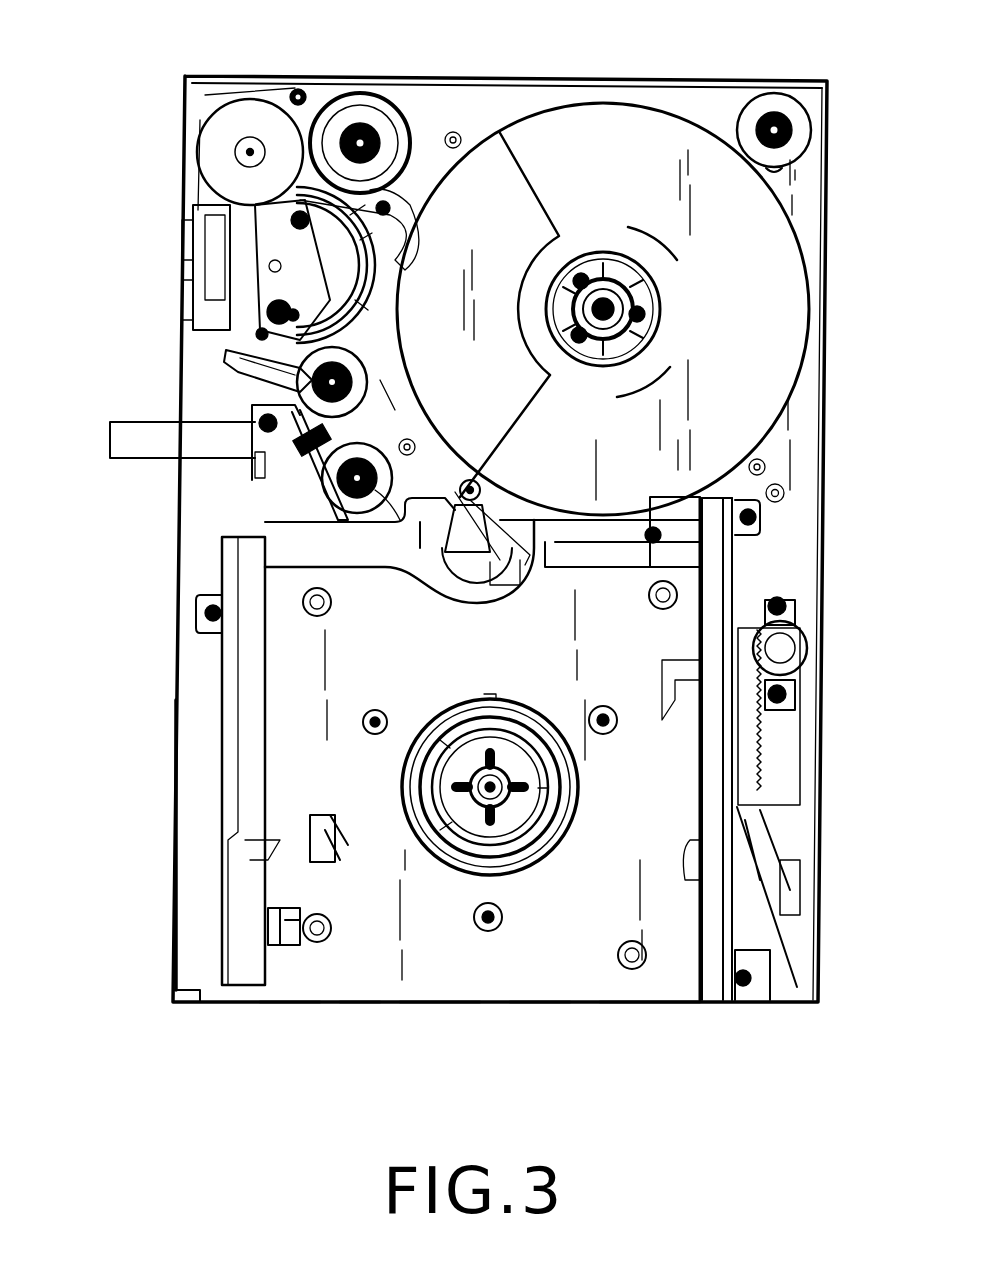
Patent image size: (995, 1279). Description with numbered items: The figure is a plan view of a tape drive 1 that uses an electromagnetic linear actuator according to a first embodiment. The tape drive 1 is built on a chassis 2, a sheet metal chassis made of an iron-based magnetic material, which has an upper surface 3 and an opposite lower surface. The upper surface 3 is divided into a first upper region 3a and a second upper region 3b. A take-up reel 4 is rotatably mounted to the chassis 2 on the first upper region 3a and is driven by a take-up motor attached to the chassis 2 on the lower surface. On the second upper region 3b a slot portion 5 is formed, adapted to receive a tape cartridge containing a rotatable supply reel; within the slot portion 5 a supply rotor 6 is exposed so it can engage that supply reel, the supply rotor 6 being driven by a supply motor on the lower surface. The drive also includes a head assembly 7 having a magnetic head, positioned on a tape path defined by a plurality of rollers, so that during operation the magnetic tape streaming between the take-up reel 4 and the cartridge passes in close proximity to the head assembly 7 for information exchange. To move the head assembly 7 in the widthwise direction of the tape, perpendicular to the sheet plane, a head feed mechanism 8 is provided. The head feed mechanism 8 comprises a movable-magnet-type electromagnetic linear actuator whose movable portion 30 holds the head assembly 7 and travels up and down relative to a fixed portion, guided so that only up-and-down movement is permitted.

The tape drive 1 is at (133, 968).
The chassis 2 is at (805, 440).
The upper surface 3 is at (192, 488).
The first upper region 3a is at (800, 170).
The second upper region 3b is at (185, 870).
The take-up reel 4 is at (790, 254).
The slot portion 5 is at (278, 670).
The supply rotor 6 is at (505, 792).
The head assembly 7 is at (240, 340).
The head feed mechanism 8 is at (232, 224).
The movable portion 30 is at (336, 108).